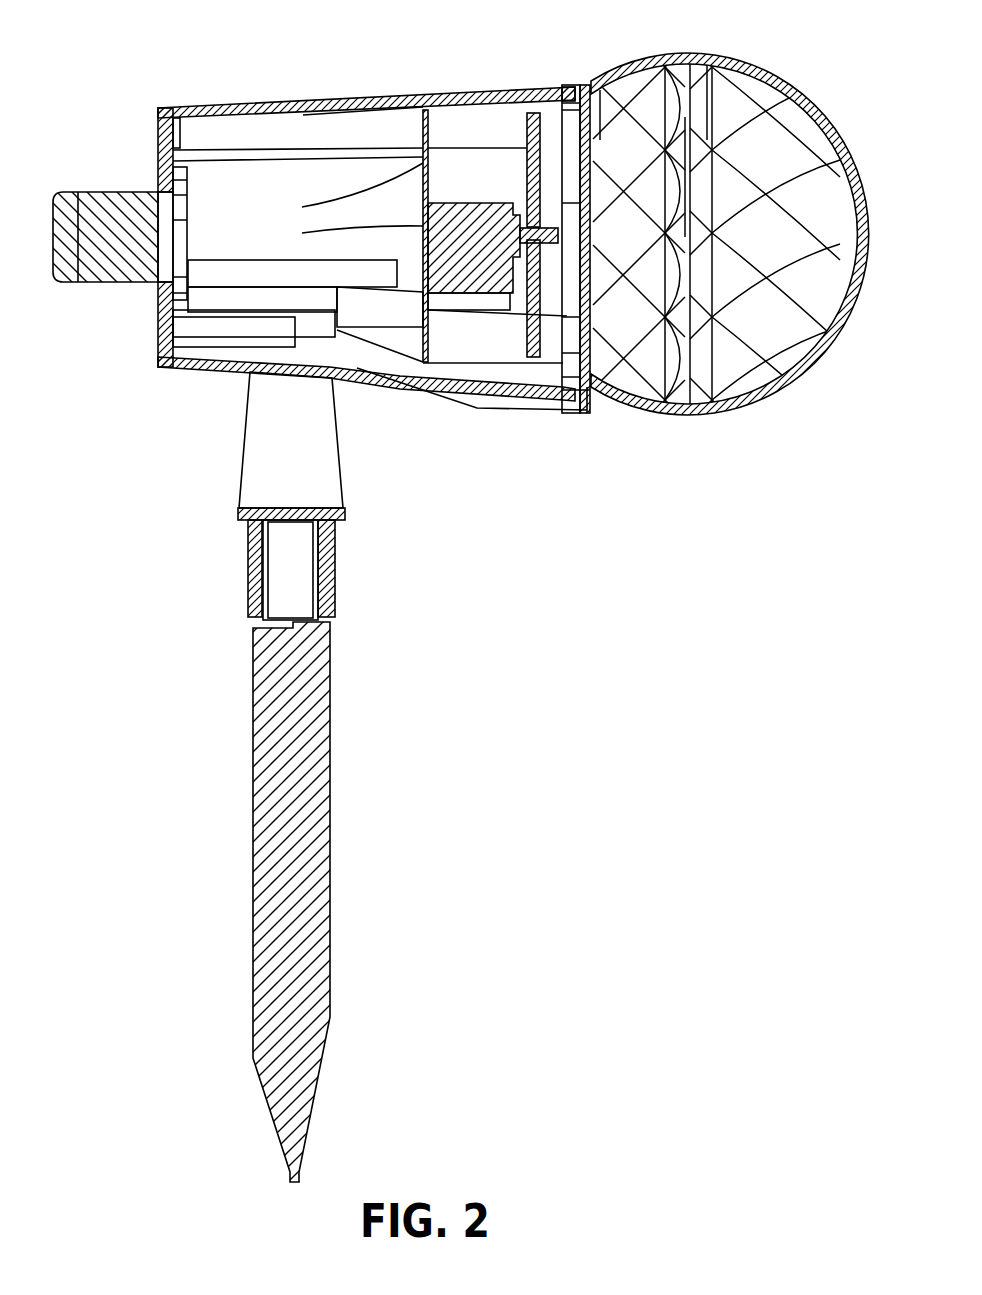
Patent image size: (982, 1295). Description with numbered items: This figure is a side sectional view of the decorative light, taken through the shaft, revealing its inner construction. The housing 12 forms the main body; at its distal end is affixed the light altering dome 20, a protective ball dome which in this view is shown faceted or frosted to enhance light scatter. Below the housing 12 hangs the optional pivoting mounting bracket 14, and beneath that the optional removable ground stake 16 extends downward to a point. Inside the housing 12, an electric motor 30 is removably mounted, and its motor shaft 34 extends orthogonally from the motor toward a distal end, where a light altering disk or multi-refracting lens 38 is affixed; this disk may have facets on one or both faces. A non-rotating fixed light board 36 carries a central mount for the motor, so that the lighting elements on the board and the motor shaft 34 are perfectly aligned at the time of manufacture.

The housing 12 is at (333, 103).
The pivoting mounting bracket 14 is at (327, 468).
The removable ground stake 16 is at (308, 832).
The light altering dome 20 is at (807, 363).
The electric motor 30 is at (484, 277).
The motor shaft 34 is at (545, 243).
The fixed light board 36 is at (422, 192).
The multi-refracting lens 38 is at (534, 115).